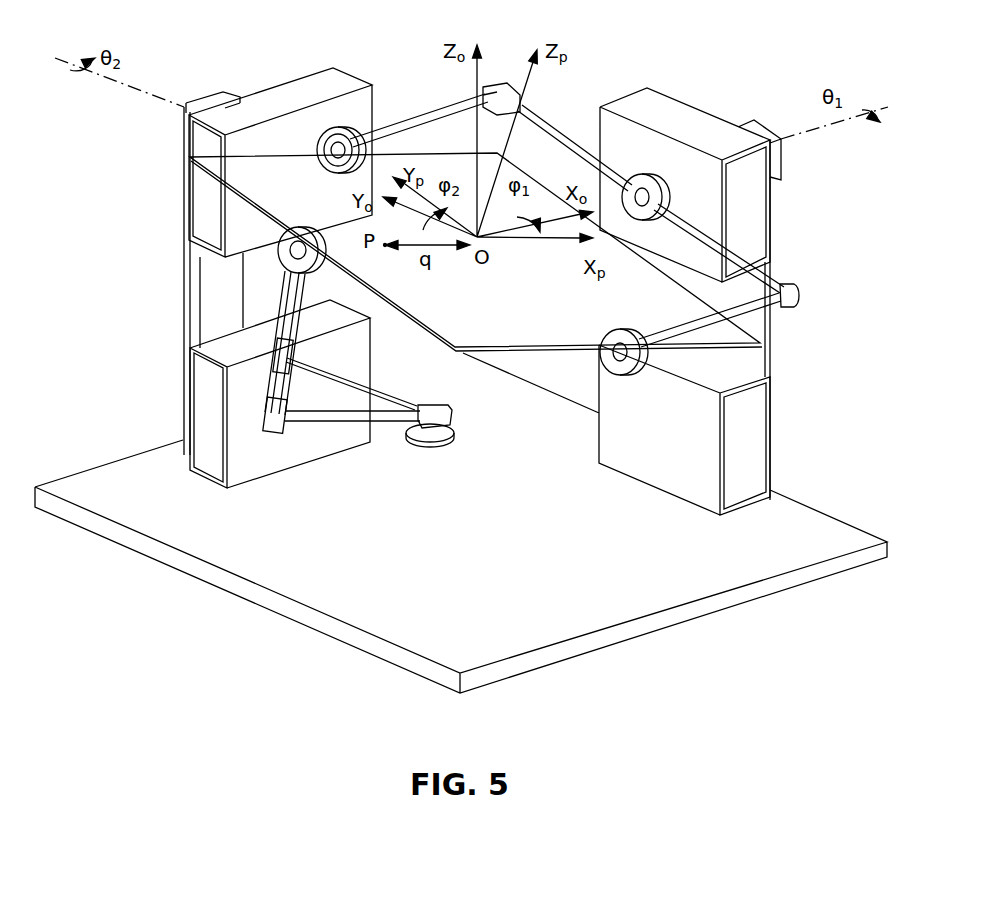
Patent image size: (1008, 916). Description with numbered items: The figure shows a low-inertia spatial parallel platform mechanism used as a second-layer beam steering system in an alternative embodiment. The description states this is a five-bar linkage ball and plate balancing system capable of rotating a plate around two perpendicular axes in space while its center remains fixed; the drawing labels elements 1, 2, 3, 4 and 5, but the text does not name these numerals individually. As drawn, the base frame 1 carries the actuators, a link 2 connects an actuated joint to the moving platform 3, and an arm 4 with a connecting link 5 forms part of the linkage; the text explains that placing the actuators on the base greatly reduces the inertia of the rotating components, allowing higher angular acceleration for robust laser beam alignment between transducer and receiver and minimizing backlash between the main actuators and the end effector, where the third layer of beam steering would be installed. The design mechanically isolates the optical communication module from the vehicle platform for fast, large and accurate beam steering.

The base frame 1 is at (200, 309).
The link rod 2 is at (752, 248).
The movable platform 3 is at (245, 182).
The arm 4 is at (345, 428).
The connecting link 5 is at (392, 390).